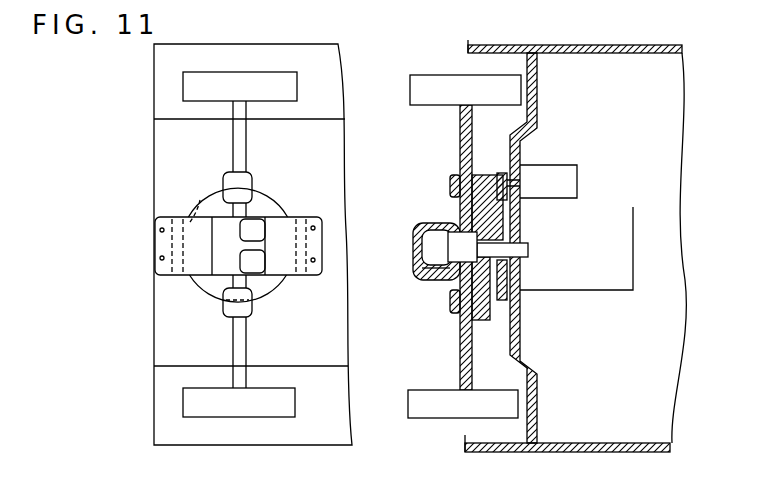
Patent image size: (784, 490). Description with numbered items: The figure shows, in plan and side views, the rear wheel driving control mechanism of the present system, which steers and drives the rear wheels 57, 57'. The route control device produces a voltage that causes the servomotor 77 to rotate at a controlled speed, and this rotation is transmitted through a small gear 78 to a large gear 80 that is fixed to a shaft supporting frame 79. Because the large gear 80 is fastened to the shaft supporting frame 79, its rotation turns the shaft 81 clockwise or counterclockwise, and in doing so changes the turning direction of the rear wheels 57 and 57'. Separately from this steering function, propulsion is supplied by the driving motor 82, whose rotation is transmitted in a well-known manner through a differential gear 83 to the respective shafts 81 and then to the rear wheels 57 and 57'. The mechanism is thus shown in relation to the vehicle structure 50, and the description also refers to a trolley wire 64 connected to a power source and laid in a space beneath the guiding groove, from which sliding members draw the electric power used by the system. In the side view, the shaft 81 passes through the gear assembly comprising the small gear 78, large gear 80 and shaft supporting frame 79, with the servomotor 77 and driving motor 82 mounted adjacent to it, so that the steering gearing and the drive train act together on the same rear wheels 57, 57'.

In FIG. 11B, the housing channel 50 is at (590, 443).
In FIG. 11A, the rear wheel 57 is at (254, 80).
In FIG. 11B, the rear wheel 57 is at (465, 75).
In FIG. 11A, the rear wheel 57' is at (260, 415).
In FIG. 11B, the rear wheel 57' is at (457, 420).
In FIG. 11A, the trolley wire 64 is at (260, 222).
In FIG. 11B, the trolley wire 64 is at (412, 234).
In FIG. 11B, the servomotor 77 is at (565, 166).
In FIG. 11B, the small gear 78 is at (500, 176).
In FIG. 11A, the shaft supporting frame 79 is at (252, 305).
In FIG. 11B, the shaft supporting frame 79 is at (452, 300).
In FIG. 11A, the large gear 80 is at (290, 212).
In FIG. 11B, the large gear 80 is at (459, 206).
In FIG. 11B, the shaft 81 is at (466, 372).
In FIG. 11B, the driving motor 82 is at (633, 252).
In FIG. 11B, the differential gear 83 is at (413, 268).